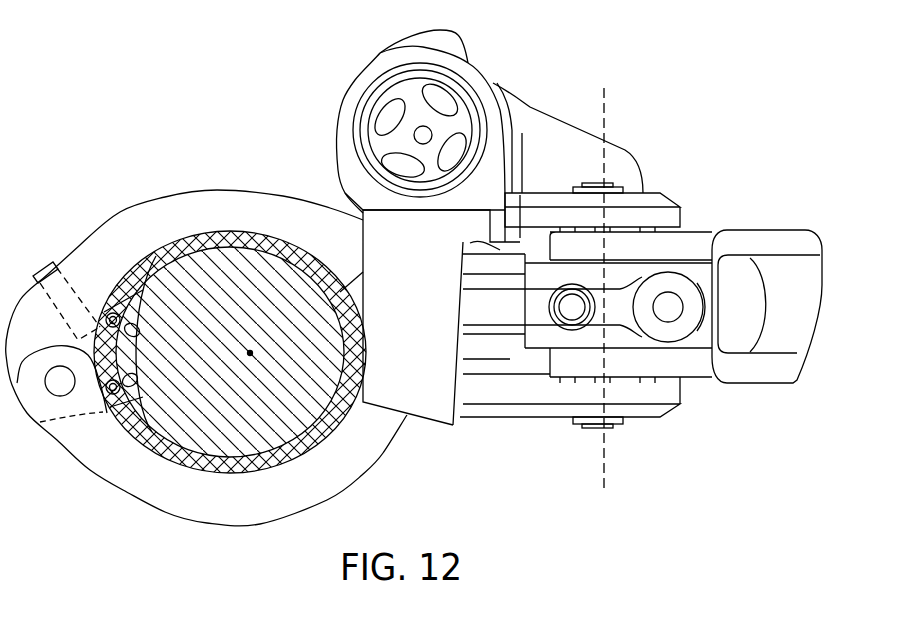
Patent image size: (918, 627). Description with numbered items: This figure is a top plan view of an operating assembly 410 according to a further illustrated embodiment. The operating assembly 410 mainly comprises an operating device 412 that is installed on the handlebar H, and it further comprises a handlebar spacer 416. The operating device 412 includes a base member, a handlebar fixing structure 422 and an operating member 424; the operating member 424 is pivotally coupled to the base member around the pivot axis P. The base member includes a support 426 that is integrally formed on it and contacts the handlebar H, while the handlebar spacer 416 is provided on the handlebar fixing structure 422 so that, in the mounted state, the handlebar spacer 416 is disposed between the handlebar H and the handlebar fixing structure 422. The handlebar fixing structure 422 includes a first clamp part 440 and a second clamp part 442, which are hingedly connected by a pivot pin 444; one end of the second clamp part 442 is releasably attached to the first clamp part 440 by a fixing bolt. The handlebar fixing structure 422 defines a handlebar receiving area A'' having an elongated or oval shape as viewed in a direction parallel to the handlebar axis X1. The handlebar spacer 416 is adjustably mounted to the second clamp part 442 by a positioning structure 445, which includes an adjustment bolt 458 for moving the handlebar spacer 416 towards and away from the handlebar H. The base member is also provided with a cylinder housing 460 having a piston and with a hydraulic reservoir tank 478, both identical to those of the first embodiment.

The operating assembly 410 is at (206, 76).
The operating device 412 is at (575, 107).
The handlebar spacer 416 is at (143, 363).
The handlebar fixing structure 422 is at (178, 192).
The operating member 424 is at (778, 228).
The support 426 is at (432, 424).
The first clamp part 440 is at (264, 490).
The second clamp part 442 is at (134, 241).
The pivot pin 444 is at (58, 388).
The positioning structure 445 is at (118, 412).
The adjustment bolt 458 is at (46, 266).
The cylinder housing 460 is at (487, 245).
The hydraulic reservoir tank 478 is at (538, 110).
The handlebar receiving area A'' is at (284, 255).
The handlebar axis X1 is at (251, 356).
The handlebar H is at (204, 458).
The pivot axis P is at (607, 111).